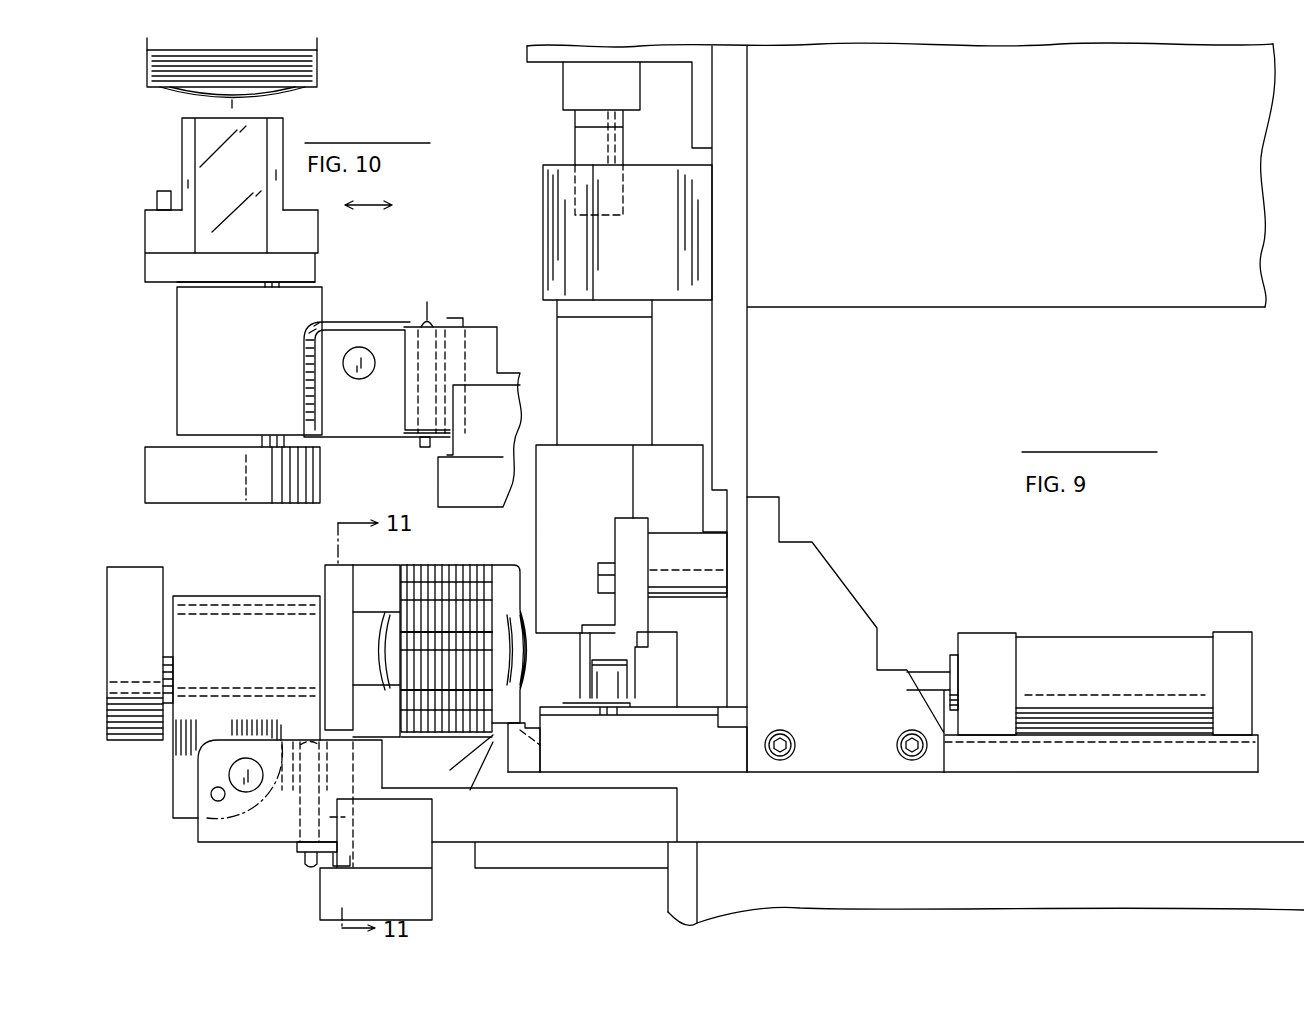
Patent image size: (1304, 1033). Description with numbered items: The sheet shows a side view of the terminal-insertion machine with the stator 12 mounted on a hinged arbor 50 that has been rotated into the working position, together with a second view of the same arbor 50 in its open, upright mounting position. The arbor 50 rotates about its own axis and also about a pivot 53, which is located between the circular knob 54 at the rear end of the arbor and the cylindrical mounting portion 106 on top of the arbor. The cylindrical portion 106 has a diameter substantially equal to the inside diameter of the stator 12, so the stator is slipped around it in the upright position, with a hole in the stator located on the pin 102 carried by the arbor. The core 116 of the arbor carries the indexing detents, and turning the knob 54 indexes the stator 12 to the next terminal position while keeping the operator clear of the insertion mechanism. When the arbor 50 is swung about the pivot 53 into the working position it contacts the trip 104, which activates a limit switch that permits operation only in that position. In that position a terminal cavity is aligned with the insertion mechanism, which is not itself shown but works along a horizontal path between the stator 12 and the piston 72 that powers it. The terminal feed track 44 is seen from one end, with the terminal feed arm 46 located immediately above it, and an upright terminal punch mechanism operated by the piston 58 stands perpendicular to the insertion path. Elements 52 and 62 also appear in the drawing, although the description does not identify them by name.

In FIG. 10, the stator 12 is at (318, 62).
In FIG. 9, the stator 12 is at (455, 580).
In FIG. 10, the cylindrical mounting portion 106 is at (196, 148).
In FIG. 10, the pin 102 is at (155, 197).
In FIG. 10, the core of the arbor 116 is at (318, 268).
In FIG. 9, the core of the arbor 116 is at (333, 578).
In FIG. 10, the arbor 50 is at (178, 327).
In FIG. 9, the arbor 50 is at (197, 725).
In FIG. 10, the pivot 53 is at (343, 364).
In FIG. 9, the pivot 53 is at (234, 777).
In FIG. 10, the circular knob 54 is at (152, 466).
In FIG. 9, the circular knob 54 is at (127, 740).
In FIG. 10, the trip 104 is at (428, 306).
In FIG. 9, the piston 58 is at (652, 310).
In FIG. 9, the slide member 62 is at (622, 640).
In FIG. 9, the terminal feed arm 46 is at (612, 681).
In FIG. 9, the terminal feed track 44 is at (617, 714).
In FIG. 9, the piston 72 is at (1108, 652).
In FIG. 9, the bracket 52 is at (208, 808).